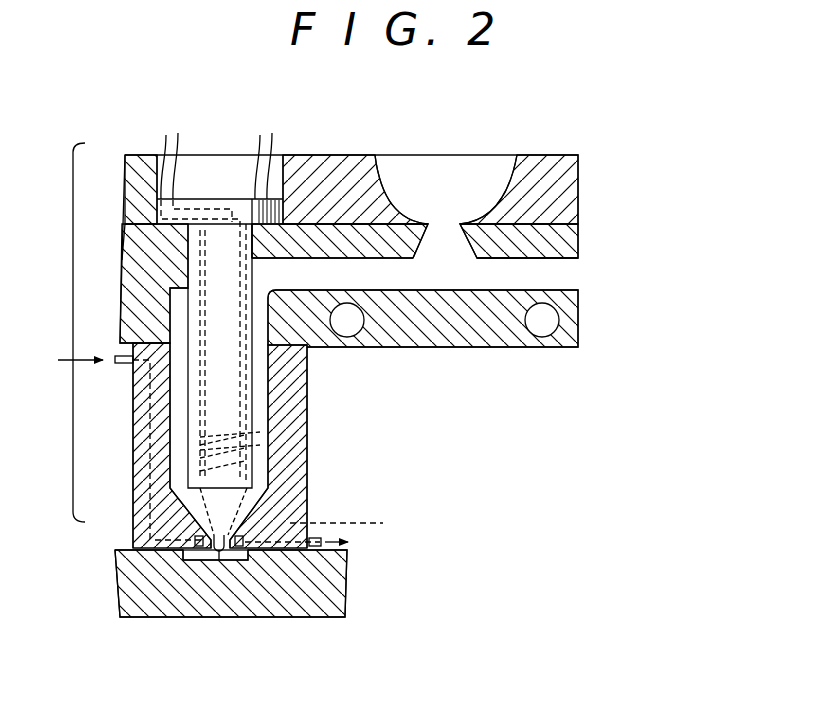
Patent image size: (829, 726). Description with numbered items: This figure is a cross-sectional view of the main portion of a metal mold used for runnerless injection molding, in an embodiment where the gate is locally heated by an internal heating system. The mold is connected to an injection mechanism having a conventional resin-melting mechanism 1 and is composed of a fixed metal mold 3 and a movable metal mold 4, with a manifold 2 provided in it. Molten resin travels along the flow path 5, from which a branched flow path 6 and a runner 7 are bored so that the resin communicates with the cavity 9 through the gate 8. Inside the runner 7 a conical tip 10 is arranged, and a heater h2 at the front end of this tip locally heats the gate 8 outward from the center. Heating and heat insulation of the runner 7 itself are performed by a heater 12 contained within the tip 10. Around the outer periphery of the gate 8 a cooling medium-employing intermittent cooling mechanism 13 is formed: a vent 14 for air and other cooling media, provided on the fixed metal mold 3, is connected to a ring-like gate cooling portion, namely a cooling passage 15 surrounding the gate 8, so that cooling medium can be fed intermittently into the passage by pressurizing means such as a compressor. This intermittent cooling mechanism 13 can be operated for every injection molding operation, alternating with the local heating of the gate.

The resin-melting mechanism 1 is at (541, 177).
The manifold 2 is at (515, 325).
The fixed metal mold 3 is at (84, 332).
The movable metal mold 4 is at (162, 600).
The flow path of the molten resin 5 is at (258, 378).
The branched flow path 6 is at (355, 268).
The runner 7 is at (178, 463).
The gate 8 is at (225, 550).
The cavity 9 is at (195, 543).
The conical tip 10 is at (190, 248).
The heater 12 is at (230, 442).
The cooling medium-employing intermittent cooling mechanism 13 is at (210, 538).
The vent 14 is at (155, 432).
The cooling passage 15 is at (263, 543).
The heater h2 is at (226, 553).